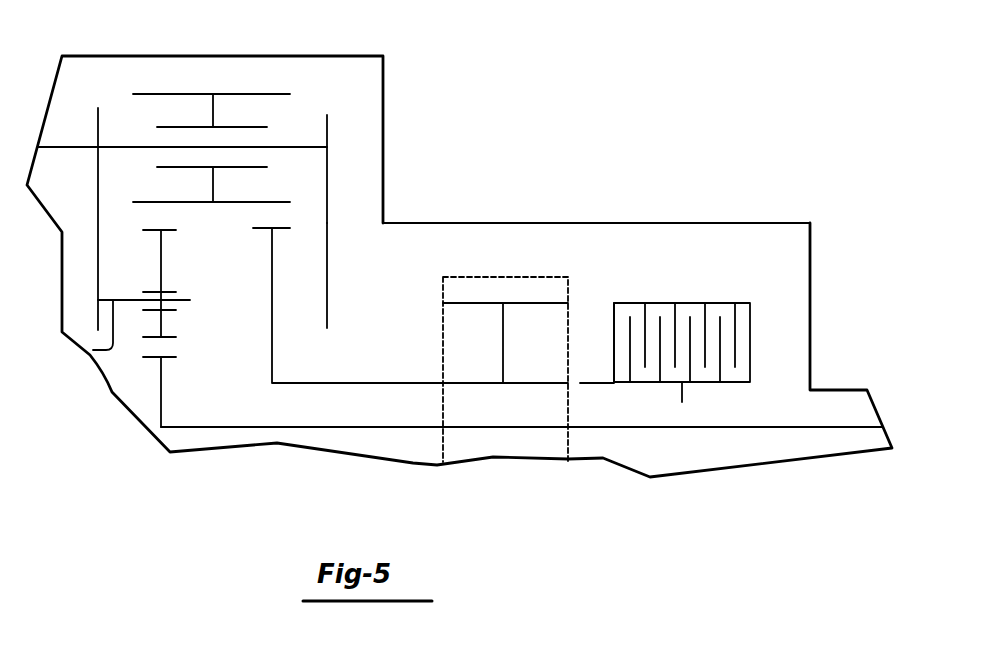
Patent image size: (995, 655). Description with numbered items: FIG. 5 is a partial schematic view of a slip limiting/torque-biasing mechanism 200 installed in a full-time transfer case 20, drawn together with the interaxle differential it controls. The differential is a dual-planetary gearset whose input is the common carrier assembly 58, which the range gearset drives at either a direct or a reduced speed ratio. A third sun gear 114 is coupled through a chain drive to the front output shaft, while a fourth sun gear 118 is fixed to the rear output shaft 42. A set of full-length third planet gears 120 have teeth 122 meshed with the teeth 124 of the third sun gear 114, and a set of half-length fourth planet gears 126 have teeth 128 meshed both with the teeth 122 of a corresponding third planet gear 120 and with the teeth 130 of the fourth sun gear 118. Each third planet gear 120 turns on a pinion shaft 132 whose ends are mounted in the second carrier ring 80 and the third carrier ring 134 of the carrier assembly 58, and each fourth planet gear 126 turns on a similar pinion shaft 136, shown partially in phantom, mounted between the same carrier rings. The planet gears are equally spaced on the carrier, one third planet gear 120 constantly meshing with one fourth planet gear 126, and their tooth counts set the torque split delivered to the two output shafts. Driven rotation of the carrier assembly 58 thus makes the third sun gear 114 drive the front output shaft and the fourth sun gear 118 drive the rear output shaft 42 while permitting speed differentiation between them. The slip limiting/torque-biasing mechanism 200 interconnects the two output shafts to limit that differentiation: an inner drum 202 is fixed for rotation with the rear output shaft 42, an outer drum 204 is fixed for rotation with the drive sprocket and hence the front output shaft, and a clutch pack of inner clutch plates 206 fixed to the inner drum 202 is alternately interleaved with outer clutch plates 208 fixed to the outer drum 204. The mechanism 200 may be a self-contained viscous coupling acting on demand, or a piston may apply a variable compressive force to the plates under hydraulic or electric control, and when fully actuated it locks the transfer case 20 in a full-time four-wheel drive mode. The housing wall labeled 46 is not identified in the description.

The transfer case 20 is at (623, 142).
The rear output shaft 42 is at (805, 425).
The housing wall 46 is at (472, 222).
The common carrier assembly 58 is at (328, 175).
The second carrier ring 80 is at (98, 228).
The third sun gear 114 is at (272, 325).
The fourth sun gear 118 is at (230, 392).
The third planet gears 120 is at (213, 110).
The teeth of third planet gears 122 is at (190, 202).
The teeth of third sun gear 124 is at (280, 215).
The fourth planet gears 126 is at (162, 325).
The teeth of fourth planet gears 128 is at (165, 338).
The teeth of fourth sun gear 130 is at (150, 357).
The pinion shaft 132 is at (300, 147).
The third carrier ring 134 is at (328, 245).
The pinion shaft 136 is at (90, 350).
The slip limiting/torque-biasing mechanism 200 is at (762, 338).
The inner drum 202 is at (682, 402).
The outer drum 204 is at (614, 318).
The inner clutch plates 206 is at (660, 368).
The outer clutch plates 208 is at (736, 313).